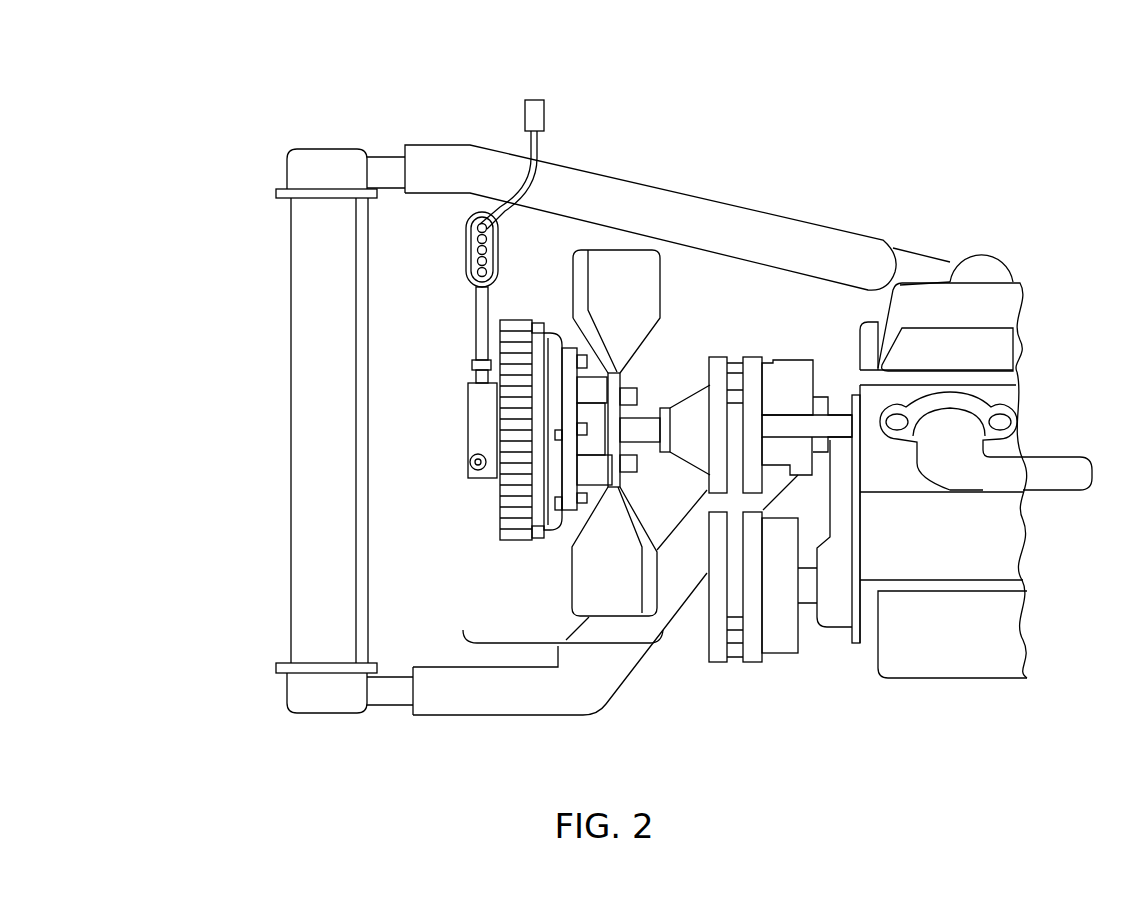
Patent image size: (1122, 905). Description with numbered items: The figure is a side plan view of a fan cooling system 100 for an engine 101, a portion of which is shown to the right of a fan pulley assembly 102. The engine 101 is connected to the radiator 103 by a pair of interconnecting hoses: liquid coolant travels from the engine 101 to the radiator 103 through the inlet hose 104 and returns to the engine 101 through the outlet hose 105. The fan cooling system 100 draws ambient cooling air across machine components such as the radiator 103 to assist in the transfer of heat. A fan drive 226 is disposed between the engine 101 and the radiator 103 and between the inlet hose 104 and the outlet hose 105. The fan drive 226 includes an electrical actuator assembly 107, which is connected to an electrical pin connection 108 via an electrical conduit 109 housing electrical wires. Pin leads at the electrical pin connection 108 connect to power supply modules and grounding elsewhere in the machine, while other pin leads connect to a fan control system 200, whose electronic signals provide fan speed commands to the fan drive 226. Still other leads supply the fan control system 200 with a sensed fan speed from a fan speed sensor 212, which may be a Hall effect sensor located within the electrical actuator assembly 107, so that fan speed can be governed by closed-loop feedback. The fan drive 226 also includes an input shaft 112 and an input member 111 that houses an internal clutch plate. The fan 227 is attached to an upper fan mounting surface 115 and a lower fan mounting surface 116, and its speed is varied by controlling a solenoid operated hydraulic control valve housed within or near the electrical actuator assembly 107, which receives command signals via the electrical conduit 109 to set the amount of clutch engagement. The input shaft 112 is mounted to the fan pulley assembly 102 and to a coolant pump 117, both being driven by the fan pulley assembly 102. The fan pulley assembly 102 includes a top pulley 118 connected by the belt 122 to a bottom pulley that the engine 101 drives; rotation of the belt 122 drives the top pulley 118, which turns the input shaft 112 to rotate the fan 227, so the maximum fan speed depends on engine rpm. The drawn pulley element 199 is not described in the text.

The fan cooling system 100 is at (228, 76).
The engine 101 is at (1000, 546).
The fan pulley assembly 102 is at (806, 646).
The radiator 103 is at (325, 588).
The inlet hose 104 is at (441, 163).
The outlet hose 105 is at (445, 695).
The electrical actuator assembly 107 is at (475, 417).
The electrical pin connection 108 is at (464, 248).
The electrical conduit 109 is at (483, 322).
The input member 111 is at (598, 422).
The input shaft 112 is at (643, 430).
The upper fan mounting surface 115 is at (596, 392).
The lower fan mounting surface 116 is at (597, 473).
The coolant pump 117 is at (795, 392).
The top pulley 118 is at (690, 402).
The belt 122 is at (737, 663).
The accessory pulley 199 is at (720, 663).
The fan control system 200 is at (538, 110).
The fan speed sensor 212 is at (470, 463).
The fan drive 226 is at (565, 644).
The fan 227 is at (622, 265).